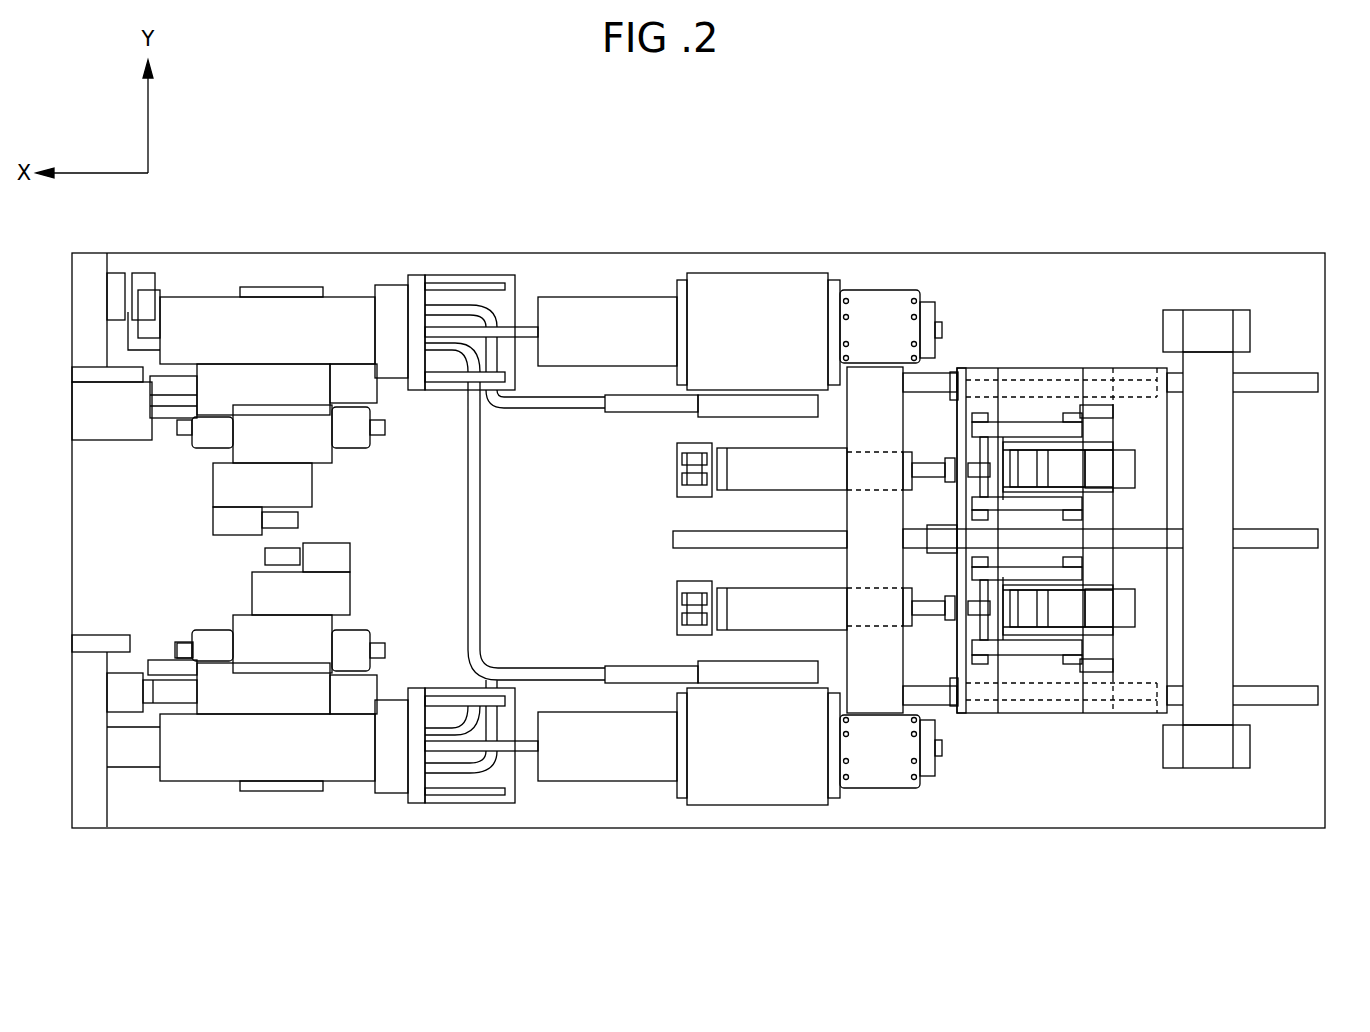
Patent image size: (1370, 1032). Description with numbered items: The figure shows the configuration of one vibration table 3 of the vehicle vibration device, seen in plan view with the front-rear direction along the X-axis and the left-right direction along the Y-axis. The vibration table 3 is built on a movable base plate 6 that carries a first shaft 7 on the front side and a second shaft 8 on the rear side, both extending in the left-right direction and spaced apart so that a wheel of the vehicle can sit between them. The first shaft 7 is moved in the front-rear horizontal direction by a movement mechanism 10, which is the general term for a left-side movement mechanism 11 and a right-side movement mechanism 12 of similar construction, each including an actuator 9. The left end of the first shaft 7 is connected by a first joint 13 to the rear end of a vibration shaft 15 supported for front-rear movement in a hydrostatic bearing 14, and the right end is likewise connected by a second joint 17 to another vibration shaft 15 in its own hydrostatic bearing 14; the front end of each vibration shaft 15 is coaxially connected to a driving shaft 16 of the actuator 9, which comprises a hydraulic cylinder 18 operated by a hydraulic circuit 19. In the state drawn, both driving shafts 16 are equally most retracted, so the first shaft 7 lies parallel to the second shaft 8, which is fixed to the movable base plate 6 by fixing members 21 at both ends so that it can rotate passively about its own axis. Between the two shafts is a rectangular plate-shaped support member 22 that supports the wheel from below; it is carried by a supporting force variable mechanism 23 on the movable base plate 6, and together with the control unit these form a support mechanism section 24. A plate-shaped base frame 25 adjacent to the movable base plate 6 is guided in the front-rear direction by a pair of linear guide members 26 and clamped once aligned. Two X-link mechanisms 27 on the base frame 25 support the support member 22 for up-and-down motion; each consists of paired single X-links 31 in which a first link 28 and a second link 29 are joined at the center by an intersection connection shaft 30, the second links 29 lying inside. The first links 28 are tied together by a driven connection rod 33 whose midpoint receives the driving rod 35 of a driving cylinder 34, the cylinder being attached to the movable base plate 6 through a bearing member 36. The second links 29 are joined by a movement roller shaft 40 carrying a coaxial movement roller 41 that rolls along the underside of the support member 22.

The vibration table 3 is at (1080, 262).
The movable base plate 6 is at (135, 515).
The first shaft 7 is at (905, 680).
The second shaft 8 is at (1192, 740).
The actuator 9 is at (292, 287).
The movement mechanism 10 is at (258, 232).
The left-side movement mechanism 11 is at (555, 848).
The right-side movement mechanism 12 is at (556, 232).
The first joint 13 is at (880, 760).
The hydrostatic bearing 14 is at (768, 302).
The vibration shaft 15 is at (597, 303).
The driving shaft 16 is at (500, 302).
The second joint 17 is at (866, 302).
The hydraulic cylinder 18 is at (200, 297).
The hydraulic circuit 19 is at (205, 373).
The fixing member 21 is at (1225, 322).
The support member 22 is at (1097, 450).
The supporting force variable mechanism 23 is at (932, 418).
The support mechanism section 24 is at (977, 346).
The base frame 25 is at (1153, 420).
The linear guide member 26 is at (948, 382).
The X-link mechanism 27 is at (1058, 437).
The first link 28 is at (993, 425).
The second link 29 is at (1090, 445).
The intersection connection shaft 30 is at (1078, 415).
The single X-link 31 is at (1025, 520).
The driven connection rod 33 is at (962, 372).
The driving cylinder 34 is at (750, 455).
The driving rod 35 is at (925, 462).
The bearing member 36 is at (693, 452).
The movement roller shaft 40 is at (1037, 413).
The movement roller 41 is at (1018, 427).